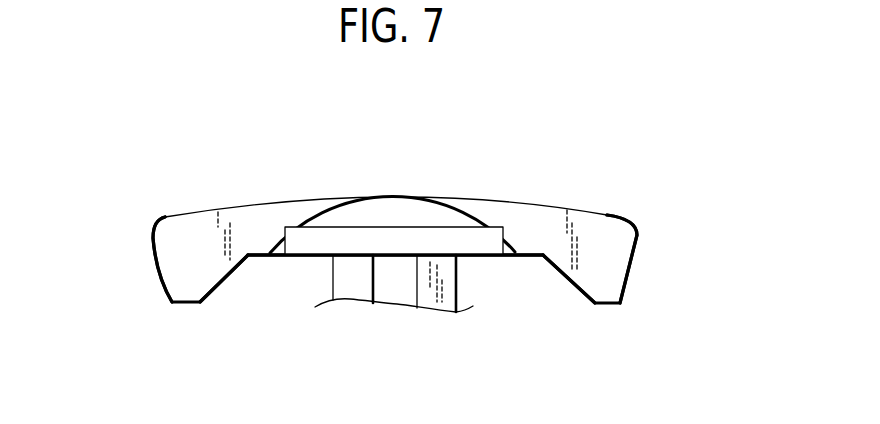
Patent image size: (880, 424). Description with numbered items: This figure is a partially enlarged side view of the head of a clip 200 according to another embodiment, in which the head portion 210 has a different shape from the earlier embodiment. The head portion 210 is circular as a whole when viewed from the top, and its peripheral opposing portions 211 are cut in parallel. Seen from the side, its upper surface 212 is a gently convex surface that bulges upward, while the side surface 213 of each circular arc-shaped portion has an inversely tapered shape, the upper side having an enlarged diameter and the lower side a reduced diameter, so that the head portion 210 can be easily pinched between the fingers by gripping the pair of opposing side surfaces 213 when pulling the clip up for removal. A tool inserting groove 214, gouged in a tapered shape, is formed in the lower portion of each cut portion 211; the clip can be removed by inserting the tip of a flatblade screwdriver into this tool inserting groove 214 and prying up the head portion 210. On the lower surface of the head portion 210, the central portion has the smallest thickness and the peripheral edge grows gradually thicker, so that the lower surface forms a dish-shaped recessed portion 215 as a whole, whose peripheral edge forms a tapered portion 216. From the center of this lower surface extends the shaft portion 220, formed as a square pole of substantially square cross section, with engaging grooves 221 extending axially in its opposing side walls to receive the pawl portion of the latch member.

The camera module 200 is at (401, 237).
The head portion 210 is at (192, 223).
The circumferential opposing portions 211 is at (490, 204).
The upper surface 212 is at (322, 198).
The side surface 213 is at (157, 260).
The tool inserting groove 214 is at (378, 212).
The recessed portion 215 is at (277, 255).
The tapered portion 216 is at (228, 277).
The shaft portion 220 is at (459, 280).
The engaging groove 221 is at (397, 276).